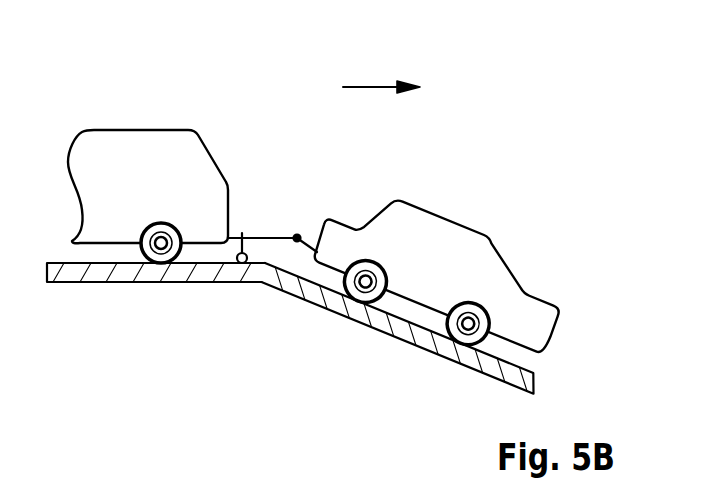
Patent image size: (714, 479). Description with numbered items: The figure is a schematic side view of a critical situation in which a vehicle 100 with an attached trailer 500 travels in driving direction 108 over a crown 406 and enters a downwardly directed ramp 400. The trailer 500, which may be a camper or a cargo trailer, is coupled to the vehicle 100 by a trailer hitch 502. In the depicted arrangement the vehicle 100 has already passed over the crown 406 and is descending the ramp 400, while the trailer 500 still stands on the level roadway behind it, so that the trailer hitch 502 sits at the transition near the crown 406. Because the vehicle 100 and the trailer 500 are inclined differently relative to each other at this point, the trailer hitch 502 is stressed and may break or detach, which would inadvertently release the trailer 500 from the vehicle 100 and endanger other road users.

The vehicle 100 is at (463, 183).
The driving direction 108 is at (369, 86).
The ramp 400 is at (412, 325).
The crown 406 is at (262, 262).
The trailer 500 is at (147, 130).
The trailer hitch 502 is at (242, 263).